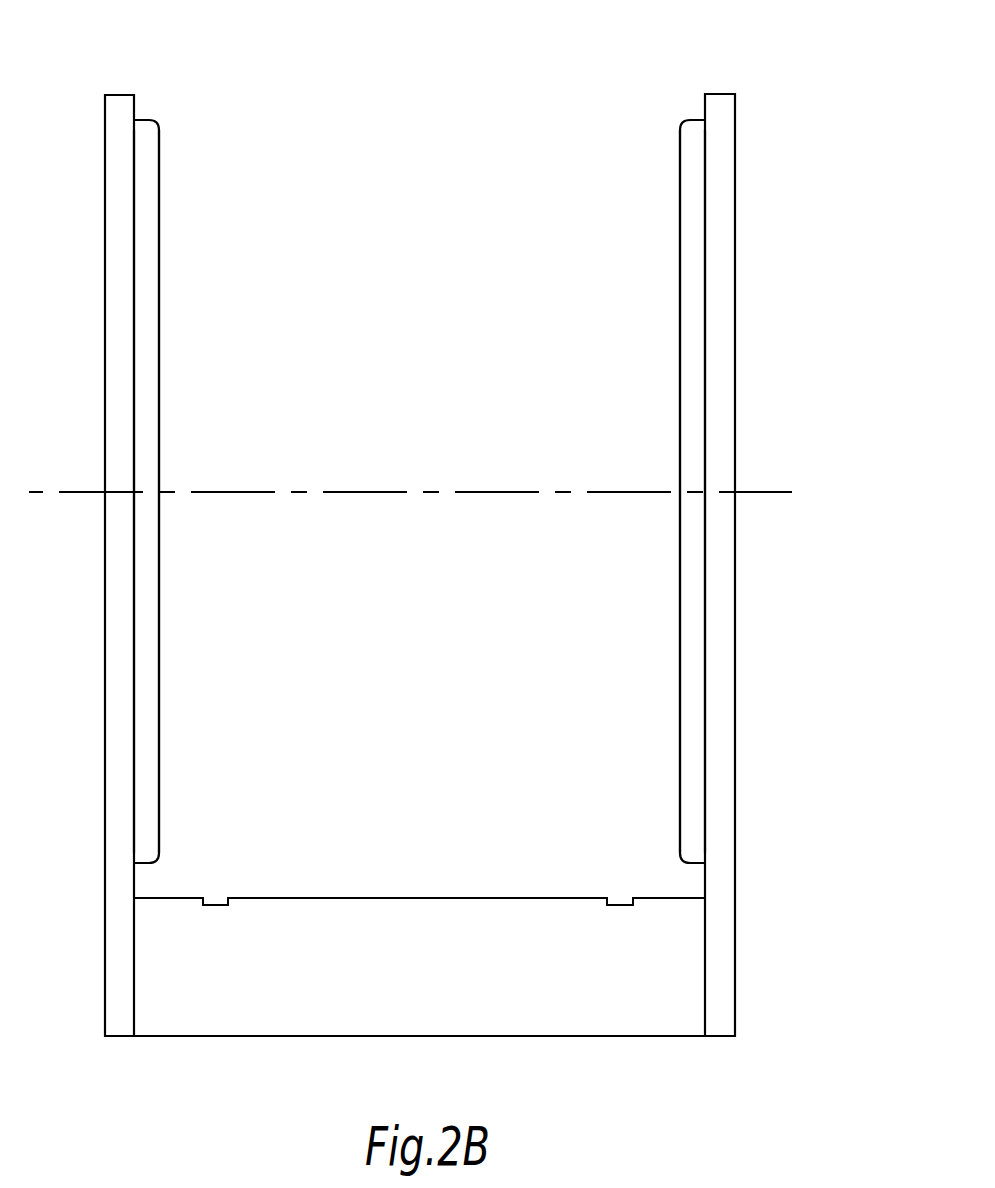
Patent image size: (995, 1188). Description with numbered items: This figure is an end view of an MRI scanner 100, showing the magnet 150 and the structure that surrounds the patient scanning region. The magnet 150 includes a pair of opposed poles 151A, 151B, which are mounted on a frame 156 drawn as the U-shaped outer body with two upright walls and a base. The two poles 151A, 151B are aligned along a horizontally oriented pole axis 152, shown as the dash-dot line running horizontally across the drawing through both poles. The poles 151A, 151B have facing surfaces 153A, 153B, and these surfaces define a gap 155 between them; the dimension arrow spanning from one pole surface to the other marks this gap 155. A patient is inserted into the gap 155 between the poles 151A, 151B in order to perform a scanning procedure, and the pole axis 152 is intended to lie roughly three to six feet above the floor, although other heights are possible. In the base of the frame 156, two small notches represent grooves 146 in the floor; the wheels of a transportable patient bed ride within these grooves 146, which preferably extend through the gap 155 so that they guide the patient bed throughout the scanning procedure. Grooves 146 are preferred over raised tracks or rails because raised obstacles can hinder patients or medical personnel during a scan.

The MRI scanner 100 is at (778, 52).
The grooves 146 is at (215, 898).
The magnet 150 is at (158, 120).
The pole 151A is at (160, 256).
The pole 151B is at (679, 256).
The pole axis 152 is at (770, 492).
The surface 153A is at (160, 327).
The surface 153B is at (679, 327).
The gap 155 is at (680, 697).
The frame 156 is at (732, 218).